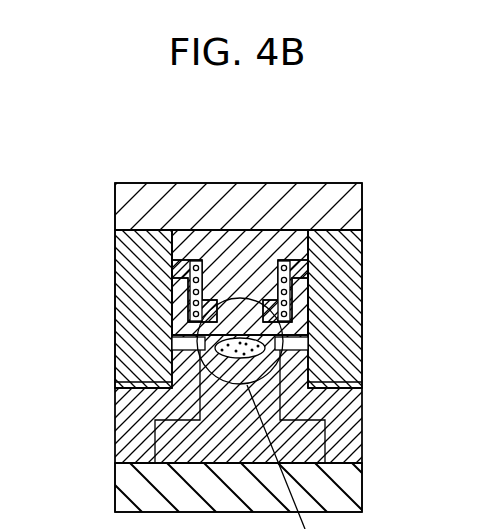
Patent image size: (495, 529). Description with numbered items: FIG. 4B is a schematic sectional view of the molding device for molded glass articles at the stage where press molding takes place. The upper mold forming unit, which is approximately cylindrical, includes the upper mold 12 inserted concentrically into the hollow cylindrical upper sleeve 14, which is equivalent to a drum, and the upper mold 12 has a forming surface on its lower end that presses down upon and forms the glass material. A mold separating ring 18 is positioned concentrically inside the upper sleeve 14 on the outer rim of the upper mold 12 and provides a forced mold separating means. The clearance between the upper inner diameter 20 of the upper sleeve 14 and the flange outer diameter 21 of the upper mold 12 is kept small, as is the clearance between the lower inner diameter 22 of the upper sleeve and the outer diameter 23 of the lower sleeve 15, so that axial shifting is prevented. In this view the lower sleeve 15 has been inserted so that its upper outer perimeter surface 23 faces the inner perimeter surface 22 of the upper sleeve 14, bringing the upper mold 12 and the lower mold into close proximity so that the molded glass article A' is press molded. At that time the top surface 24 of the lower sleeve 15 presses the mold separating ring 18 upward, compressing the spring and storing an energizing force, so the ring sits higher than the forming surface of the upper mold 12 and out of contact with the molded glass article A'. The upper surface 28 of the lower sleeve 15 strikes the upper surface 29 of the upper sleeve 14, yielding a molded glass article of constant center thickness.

The upper mold 12 is at (288, 215).
The upper sleeve 14 is at (140, 330).
The lower sleeve 15 is at (135, 445).
The mold separating ring 18 is at (172, 262).
The upper inner diameter 20 is at (138, 240).
The flange outer diameter 21 is at (165, 238).
The lower inner diameter 22 is at (180, 300).
The outer diameter 23 is at (175, 360).
The top surface 24 is at (190, 270).
The upper surface 28 is at (130, 412).
The upper surface 29 is at (165, 386).
The molded glass article A' is at (240, 237).